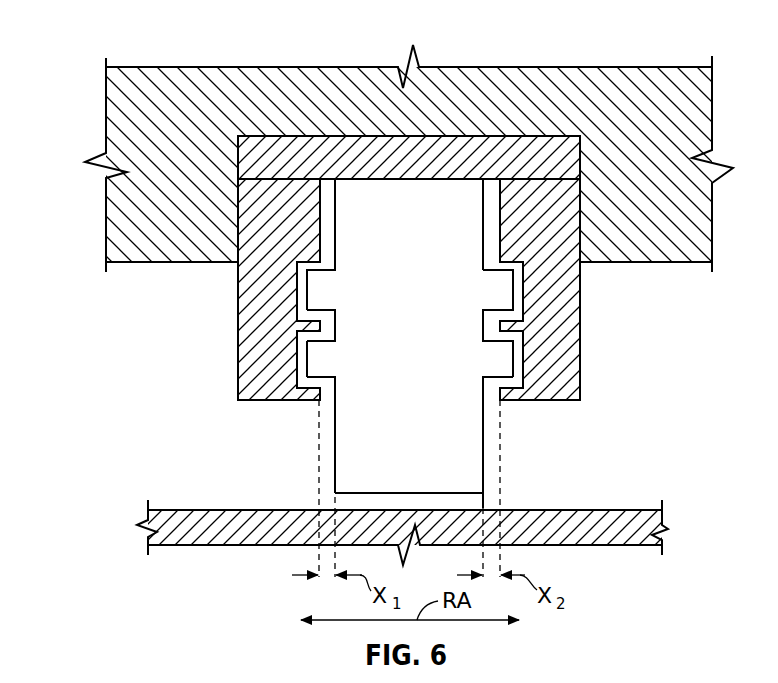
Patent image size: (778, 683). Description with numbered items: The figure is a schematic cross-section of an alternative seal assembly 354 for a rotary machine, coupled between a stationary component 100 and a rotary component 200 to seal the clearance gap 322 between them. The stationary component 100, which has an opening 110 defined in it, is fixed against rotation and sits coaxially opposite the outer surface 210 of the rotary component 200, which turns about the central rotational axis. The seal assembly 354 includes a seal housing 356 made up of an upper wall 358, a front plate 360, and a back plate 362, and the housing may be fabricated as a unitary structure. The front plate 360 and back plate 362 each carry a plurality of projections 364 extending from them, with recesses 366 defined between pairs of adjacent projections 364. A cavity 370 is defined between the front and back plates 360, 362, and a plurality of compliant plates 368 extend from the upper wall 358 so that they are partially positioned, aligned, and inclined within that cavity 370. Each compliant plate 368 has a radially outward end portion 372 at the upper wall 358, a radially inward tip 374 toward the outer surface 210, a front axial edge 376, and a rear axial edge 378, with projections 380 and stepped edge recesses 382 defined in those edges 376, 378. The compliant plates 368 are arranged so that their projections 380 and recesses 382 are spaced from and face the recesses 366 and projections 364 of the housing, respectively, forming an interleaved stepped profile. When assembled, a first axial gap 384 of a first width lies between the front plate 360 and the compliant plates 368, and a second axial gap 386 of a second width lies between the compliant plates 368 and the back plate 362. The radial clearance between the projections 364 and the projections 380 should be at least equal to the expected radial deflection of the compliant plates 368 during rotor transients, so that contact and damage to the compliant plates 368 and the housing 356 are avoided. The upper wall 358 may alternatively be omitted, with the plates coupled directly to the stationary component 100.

The stationary component 100 is at (430, 121).
The opening 110 is at (532, 137).
The rotary component 200 is at (662, 545).
The outer surface 210 is at (587, 510).
The clearance gap 322 is at (480, 504).
The seal assembly 354 is at (127, 46).
The seal housing 356 is at (584, 343).
The upper wall 358 is at (430, 166).
The front plate 360 is at (302, 240).
The back plate 362 is at (560, 236).
The projections 364 is at (297, 326).
The recesses 366 is at (285, 360).
The compliant plates 368 is at (430, 405).
The cavity 370 is at (487, 217).
The radially outward end portion 372 is at (386, 181).
The radially inward tip 374 is at (412, 493).
The front axial edge 376 is at (335, 259).
The rear axial edge 378 is at (483, 231).
The projections 380 is at (321, 359).
The stepped edge recesses 382 is at (335, 323).
The first axial gap 384 is at (328, 399).
The second axial gap 386 is at (489, 398).